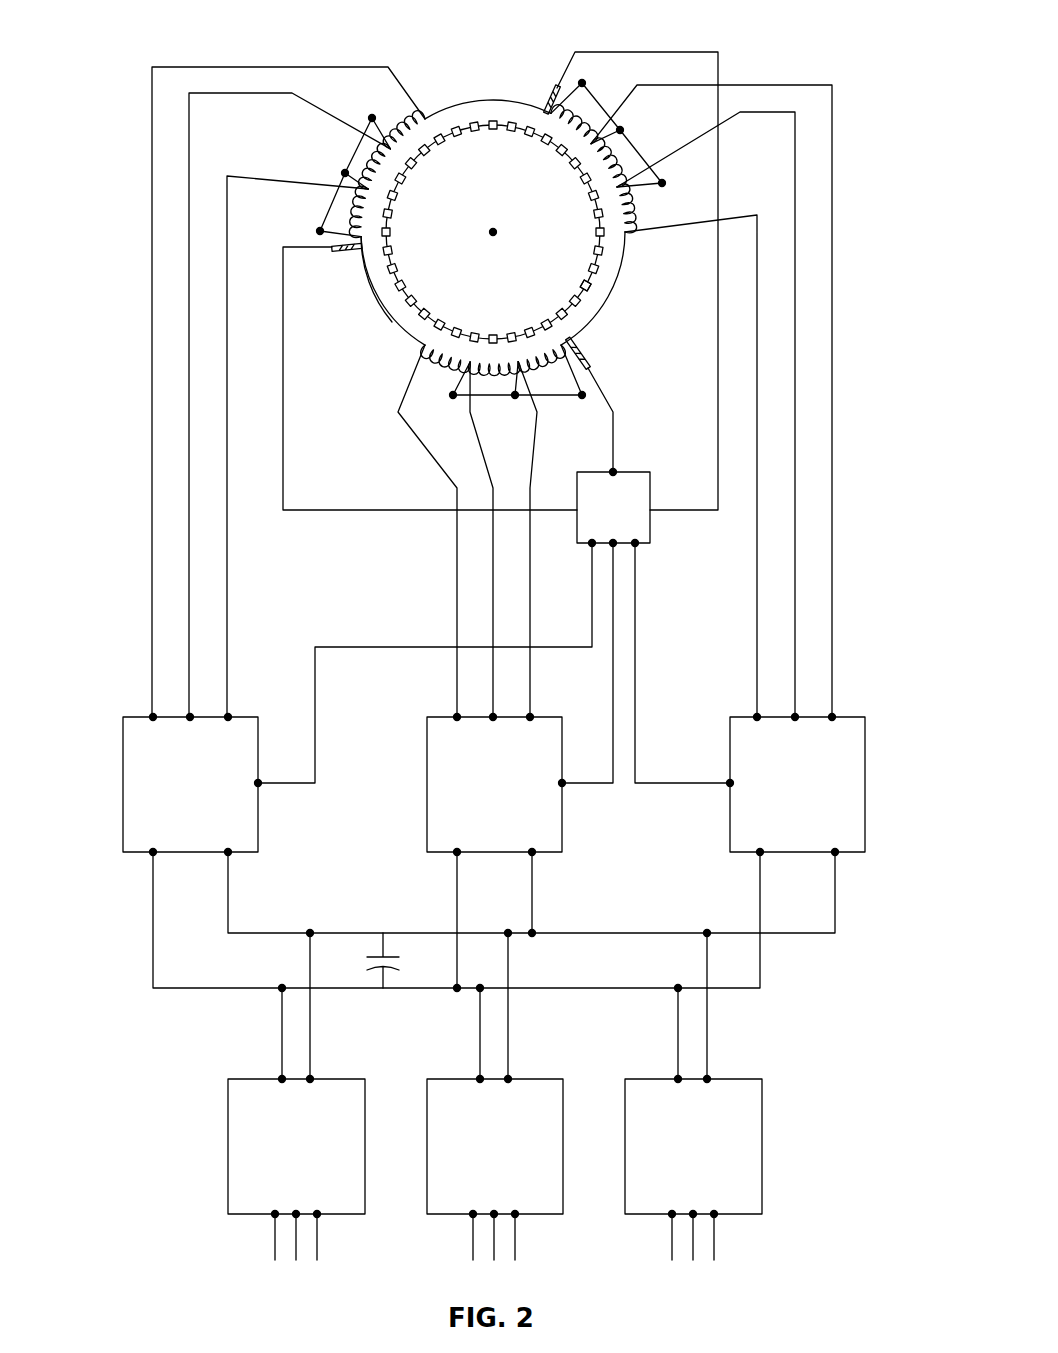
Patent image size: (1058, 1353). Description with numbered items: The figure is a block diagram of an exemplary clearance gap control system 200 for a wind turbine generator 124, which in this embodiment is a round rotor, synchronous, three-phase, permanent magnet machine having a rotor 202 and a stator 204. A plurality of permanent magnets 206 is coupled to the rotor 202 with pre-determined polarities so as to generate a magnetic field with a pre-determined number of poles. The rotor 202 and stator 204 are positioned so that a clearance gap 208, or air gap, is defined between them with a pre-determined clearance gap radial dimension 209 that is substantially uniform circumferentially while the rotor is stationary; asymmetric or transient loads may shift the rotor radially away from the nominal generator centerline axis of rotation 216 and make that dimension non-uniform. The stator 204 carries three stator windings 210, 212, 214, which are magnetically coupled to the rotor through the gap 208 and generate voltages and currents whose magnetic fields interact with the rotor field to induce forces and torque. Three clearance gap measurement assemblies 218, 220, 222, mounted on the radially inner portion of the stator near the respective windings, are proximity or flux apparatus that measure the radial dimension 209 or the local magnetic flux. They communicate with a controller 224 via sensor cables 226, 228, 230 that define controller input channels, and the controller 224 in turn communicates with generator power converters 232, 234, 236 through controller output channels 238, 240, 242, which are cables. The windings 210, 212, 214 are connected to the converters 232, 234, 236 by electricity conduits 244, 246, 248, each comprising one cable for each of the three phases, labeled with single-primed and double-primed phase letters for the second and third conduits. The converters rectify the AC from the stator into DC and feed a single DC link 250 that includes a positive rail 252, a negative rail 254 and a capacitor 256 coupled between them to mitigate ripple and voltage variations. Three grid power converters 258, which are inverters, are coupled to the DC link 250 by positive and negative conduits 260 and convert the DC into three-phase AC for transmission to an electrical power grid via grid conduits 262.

The clearance gap control system 200 is at (140, 50).
The generator 124 is at (489, 94).
The rotor 202 is at (520, 332).
The stator 204 is at (410, 336).
The permanent magnets 206 is at (440, 160).
The clearance gap 208 is at (403, 318).
The clearance gap radial dimension 209 is at (593, 296).
The stator winding 210 is at (318, 206).
The stator winding 212 is at (405, 380).
The stator winding 214 is at (634, 238).
The nominal generator centerline axis of rotation 216 is at (493, 230).
The clearance gap measurement assembly 218 is at (345, 252).
The clearance gap measurement assembly 220 is at (586, 356).
The clearance gap measurement assembly 222 is at (548, 95).
The controller 224 is at (638, 524).
The sensor cable 226 is at (368, 510).
The sensor cable 228 is at (615, 428).
The sensor cable 230 is at (718, 470).
The generator power converter 232 is at (214, 799).
The generator power converter 234 is at (518, 799).
The generator power converter 236 is at (821, 799).
The controller output channel 238 is at (388, 647).
The controller output channel 240 is at (582, 786).
The controller output channel 242 is at (637, 782).
The electricity conduit 244 is at (148, 460).
The electricity conduit 246 is at (455, 550).
The electricity conduit 248 is at (838, 458).
The DC link 250 is at (372, 920).
The positive rail 252 is at (600, 933).
The negative rail 254 is at (570, 988).
The capacitor 256 is at (388, 955).
The grid power converter 258 is at (320, 1161).
The positive and negative conduits 260 is at (268, 1030).
The grid conduit 262 is at (268, 1233).